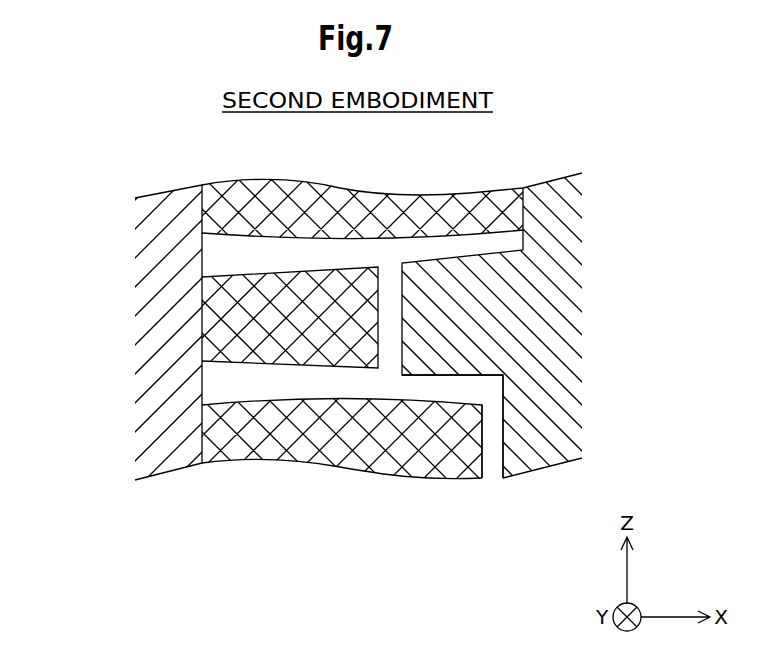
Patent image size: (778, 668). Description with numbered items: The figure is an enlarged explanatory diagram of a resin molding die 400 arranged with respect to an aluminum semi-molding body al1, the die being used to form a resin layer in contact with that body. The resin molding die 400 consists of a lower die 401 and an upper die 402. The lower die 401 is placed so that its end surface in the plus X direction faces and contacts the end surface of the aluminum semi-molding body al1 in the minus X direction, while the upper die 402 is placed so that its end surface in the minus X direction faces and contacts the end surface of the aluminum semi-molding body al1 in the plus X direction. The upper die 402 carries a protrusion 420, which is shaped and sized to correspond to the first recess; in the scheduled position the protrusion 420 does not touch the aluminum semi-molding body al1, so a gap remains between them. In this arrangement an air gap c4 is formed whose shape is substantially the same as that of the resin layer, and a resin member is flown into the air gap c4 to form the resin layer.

The resin molding die 400 is at (357, 334).
The lower die 401 is at (123, 237).
The upper die 402 is at (587, 270).
The aluminum semi-molding body al1 is at (218, 186).
The protrusion 420 is at (425, 367).
The air gap c4 is at (497, 462).